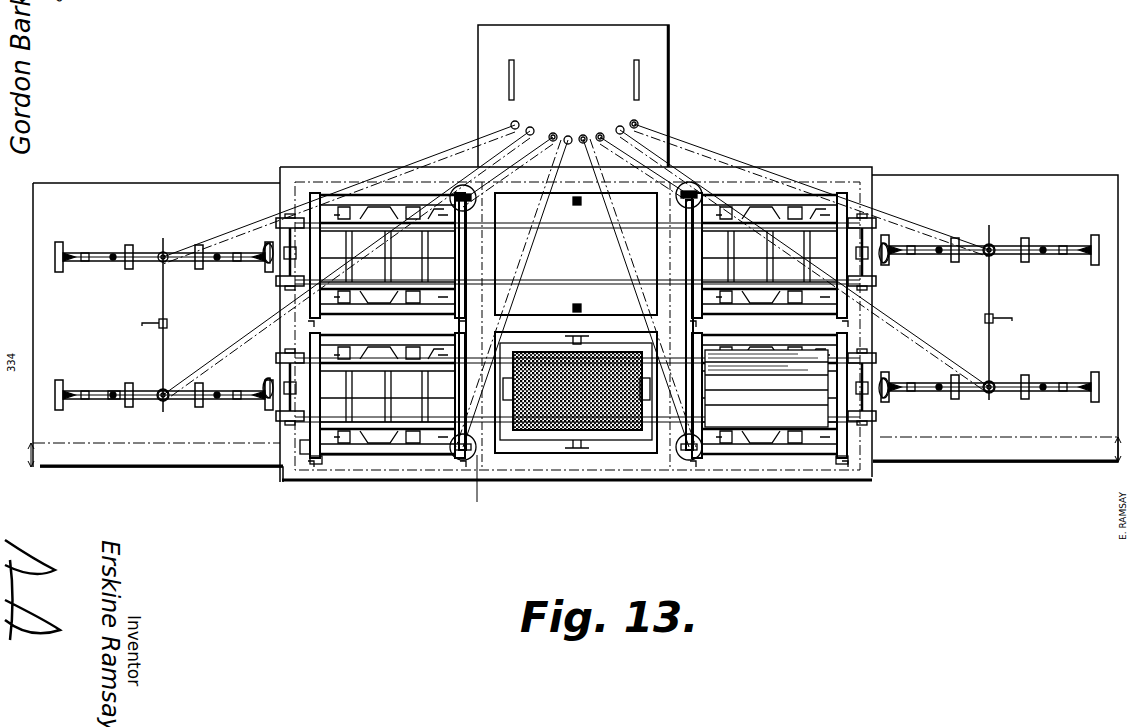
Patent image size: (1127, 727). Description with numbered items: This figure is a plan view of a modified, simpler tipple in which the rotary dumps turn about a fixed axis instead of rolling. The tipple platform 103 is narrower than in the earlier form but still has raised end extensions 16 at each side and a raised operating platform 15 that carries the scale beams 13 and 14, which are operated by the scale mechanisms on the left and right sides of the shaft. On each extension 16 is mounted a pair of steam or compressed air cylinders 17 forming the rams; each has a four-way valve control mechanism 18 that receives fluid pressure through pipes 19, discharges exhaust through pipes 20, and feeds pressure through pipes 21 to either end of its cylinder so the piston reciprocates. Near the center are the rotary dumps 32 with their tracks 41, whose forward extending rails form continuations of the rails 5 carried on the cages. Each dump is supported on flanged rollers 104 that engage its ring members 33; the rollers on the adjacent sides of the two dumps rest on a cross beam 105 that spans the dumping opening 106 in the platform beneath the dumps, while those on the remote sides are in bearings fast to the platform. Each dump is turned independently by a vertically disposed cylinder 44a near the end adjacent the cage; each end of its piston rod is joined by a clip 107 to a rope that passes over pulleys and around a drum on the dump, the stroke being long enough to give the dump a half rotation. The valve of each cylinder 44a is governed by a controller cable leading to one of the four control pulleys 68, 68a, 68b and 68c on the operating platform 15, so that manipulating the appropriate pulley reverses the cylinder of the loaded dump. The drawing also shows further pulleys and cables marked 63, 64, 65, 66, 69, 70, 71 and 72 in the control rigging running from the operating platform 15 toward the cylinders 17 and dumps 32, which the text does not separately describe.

The rails 5 is at (535, 335).
The scale beam 13 is at (509, 72).
The scale beam 14 is at (639, 68).
The operating platform 15 is at (449, 149).
The extension 16 is at (180, 455).
The cylinders 17 is at (110, 266).
The valve control mechanism 18 is at (160, 390).
The pipes 19 is at (1005, 320).
The pipes 20 is at (989, 395).
The pipes 21 is at (115, 400).
The rotary dumps 32 is at (386, 340).
The ring members 33 is at (308, 454).
The tracks 41 is at (494, 282).
The cylinder 44a is at (466, 455).
The pulley 63 is at (478, 160).
The pulley 64 is at (490, 176).
The pulley 65 is at (518, 122).
The pulley 66 is at (533, 128).
The control pulley 68 is at (566, 136).
The control pulley 68a is at (583, 135).
The control pulley 68b is at (577, 149).
The control pulley 68c is at (598, 133).
The cable 69 is at (700, 165).
The pulley 70 is at (680, 150).
The pulley 71 is at (619, 126).
The pulley 72 is at (606, 127).
The tipple platform 103 is at (373, 480).
The flanged rollers 104 is at (312, 465).
The cross beam 105 is at (352, 323).
The dumping opening 106 is at (418, 458).
The clip 107 is at (472, 460).